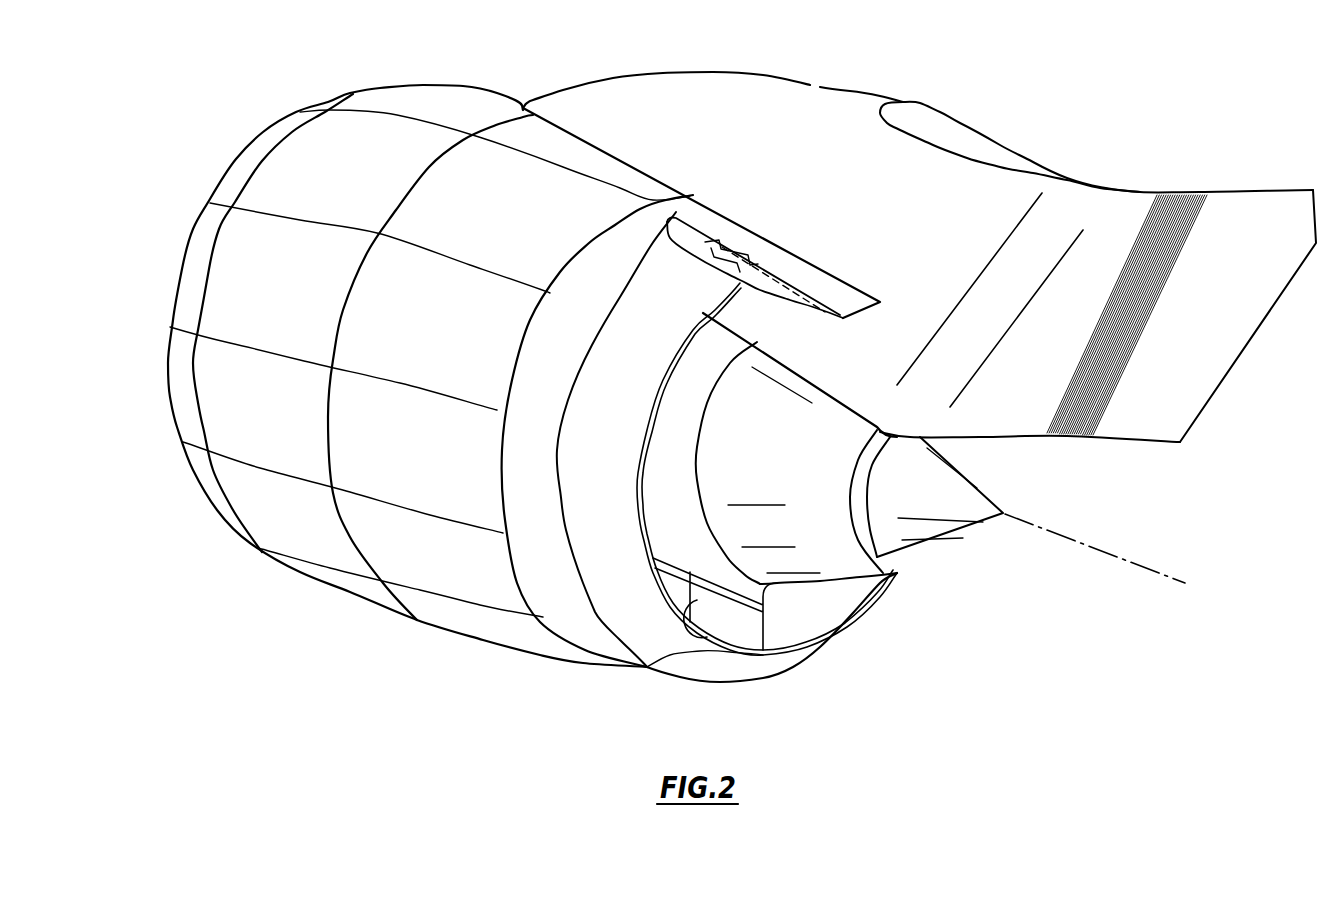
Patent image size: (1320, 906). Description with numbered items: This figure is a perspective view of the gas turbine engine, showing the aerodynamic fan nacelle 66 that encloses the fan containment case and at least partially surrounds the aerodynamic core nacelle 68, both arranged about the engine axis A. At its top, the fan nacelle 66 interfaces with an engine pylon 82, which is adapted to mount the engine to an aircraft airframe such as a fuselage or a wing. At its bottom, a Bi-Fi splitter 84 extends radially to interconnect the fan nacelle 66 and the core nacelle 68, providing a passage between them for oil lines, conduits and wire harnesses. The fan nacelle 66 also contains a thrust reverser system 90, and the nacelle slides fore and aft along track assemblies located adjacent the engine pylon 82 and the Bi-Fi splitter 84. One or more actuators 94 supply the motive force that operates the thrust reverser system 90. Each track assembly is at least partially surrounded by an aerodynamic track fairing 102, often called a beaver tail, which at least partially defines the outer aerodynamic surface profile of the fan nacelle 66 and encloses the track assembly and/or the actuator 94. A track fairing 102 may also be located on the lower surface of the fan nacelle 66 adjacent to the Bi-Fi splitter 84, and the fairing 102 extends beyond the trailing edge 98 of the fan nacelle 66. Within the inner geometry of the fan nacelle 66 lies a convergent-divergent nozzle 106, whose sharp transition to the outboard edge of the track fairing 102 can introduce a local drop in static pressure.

The fan nacelle 66 is at (473, 80).
The engine pylon 82 is at (745, 92).
The aerodynamic track fairing 102 is at (785, 257).
The actuator 94 is at (733, 253).
The thrust reverser system 90 is at (547, 577).
The core nacelle 68 is at (830, 583).
The trailing edge 98 is at (883, 590).
The Bi-Fi splitter 84 is at (755, 622).
The convergent-divergent nozzle 106 is at (707, 638).
The engine axis A is at (1143, 553).